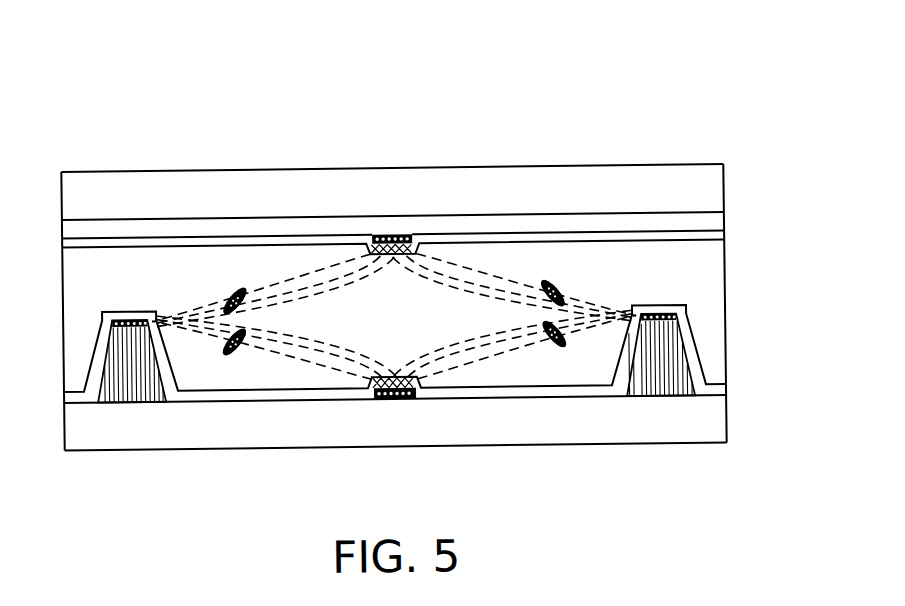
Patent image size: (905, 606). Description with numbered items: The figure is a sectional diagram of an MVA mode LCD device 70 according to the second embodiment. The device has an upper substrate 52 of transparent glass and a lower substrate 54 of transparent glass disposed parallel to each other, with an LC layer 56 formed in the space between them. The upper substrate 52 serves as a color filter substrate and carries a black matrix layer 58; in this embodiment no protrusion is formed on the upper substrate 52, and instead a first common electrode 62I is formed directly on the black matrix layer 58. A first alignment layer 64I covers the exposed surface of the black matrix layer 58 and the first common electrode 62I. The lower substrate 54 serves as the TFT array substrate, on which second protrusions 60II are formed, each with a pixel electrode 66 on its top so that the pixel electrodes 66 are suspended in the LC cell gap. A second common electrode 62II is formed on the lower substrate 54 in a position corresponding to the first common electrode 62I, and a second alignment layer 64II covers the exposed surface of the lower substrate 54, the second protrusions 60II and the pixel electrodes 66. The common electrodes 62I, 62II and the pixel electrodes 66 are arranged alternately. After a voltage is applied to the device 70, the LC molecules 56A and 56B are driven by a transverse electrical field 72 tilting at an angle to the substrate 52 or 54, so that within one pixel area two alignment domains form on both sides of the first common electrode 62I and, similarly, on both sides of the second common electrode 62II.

The MVA mode LCD device 70 is at (715, 43).
The upper substrate 52 is at (709, 194).
The black matrix layer 58 is at (709, 224).
The first alignment layer 64I is at (707, 242).
The first common electrode 62I is at (394, 233).
The LC layer 56 is at (709, 325).
The LC molecule 56A is at (243, 281).
The LC molecule 56B is at (548, 285).
The transverse electrical field 72 is at (328, 292).
The second alignment layer 64II is at (709, 386).
The second protrusion 60II is at (123, 327).
The pixel electrode 66 is at (125, 317).
The second common electrode 62II is at (394, 399).
The lower substrate 54 is at (709, 421).